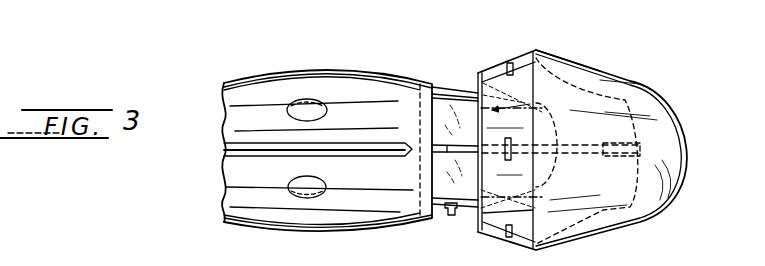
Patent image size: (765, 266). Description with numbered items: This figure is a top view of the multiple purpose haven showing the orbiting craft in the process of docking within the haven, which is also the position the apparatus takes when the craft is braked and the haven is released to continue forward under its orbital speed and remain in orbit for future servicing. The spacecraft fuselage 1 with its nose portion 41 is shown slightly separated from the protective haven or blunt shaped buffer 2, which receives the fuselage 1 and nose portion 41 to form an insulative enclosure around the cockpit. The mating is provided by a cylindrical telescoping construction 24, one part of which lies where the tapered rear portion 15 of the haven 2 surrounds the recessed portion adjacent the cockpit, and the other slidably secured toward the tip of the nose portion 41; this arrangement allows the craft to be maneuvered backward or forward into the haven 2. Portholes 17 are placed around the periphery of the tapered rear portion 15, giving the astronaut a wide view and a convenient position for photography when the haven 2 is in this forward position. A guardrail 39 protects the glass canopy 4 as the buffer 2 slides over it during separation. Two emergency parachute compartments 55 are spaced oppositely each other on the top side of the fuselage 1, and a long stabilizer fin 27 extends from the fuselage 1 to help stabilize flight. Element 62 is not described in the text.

The spacecraft fuselage 1 is at (396, 69).
The protective haven or blunt shaped buffer 2 is at (568, 55).
The glass canopy 4 is at (447, 107).
The tapered rear portion 15 is at (490, 227).
The portholes 17 is at (510, 161).
The cylindrical telescoping construction 24 is at (582, 157).
The stabilizer fin 27 is at (367, 145).
The guardrail 39 is at (447, 149).
The nose portion 41 is at (553, 124).
The emergency parachute compartments 55 is at (308, 100).
The top edge 62 is at (537, 50).